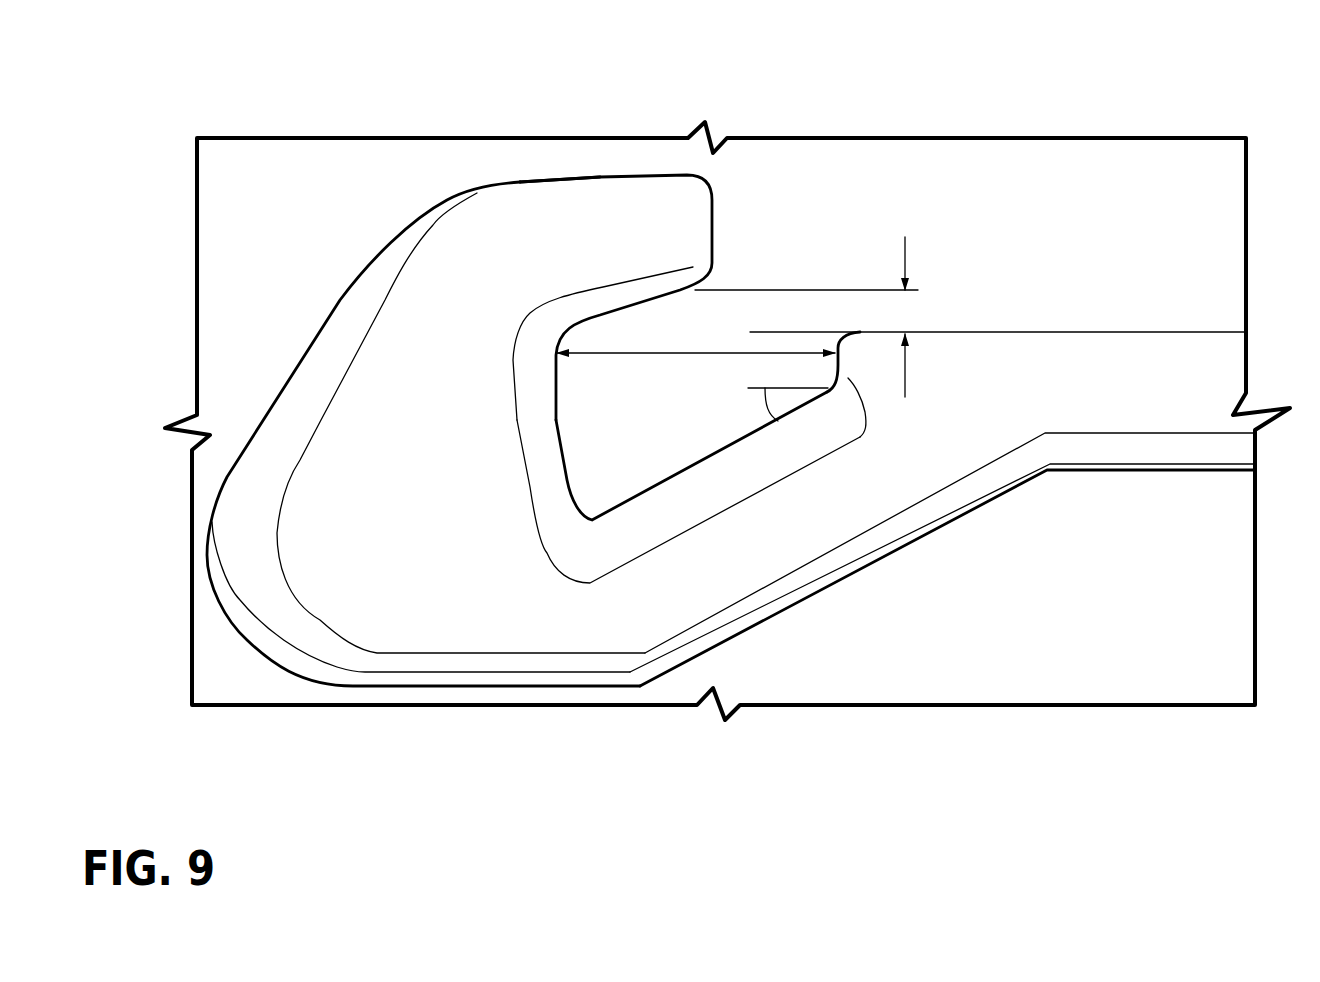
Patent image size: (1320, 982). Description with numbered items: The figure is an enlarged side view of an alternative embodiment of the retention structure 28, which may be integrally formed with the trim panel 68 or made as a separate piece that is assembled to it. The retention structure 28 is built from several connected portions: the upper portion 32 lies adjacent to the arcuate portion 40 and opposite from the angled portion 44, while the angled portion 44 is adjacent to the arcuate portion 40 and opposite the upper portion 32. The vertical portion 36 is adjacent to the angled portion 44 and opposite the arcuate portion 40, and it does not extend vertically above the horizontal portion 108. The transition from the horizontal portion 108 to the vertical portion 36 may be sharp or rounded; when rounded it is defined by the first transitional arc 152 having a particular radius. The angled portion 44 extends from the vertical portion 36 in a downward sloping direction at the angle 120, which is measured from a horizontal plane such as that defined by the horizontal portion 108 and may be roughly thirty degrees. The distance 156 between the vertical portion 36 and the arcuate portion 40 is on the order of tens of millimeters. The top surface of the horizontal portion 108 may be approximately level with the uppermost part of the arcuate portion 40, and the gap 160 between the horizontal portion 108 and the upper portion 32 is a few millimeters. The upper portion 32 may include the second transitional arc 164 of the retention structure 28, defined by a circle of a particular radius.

The retention structure 28 is at (231, 622).
The upper portion 32 is at (618, 220).
The vertical portion 36 is at (846, 348).
The arcuate portion 40 is at (407, 433).
The angled portion 44 is at (733, 555).
The trim panel 68 is at (1163, 185).
The horizontal portion 108 is at (1178, 360).
The angle 120 is at (770, 418).
The first transitional arc 152 is at (848, 343).
The distance 156 is at (690, 273).
The gap 160 is at (908, 245).
The second transitional arc 164 is at (642, 353).